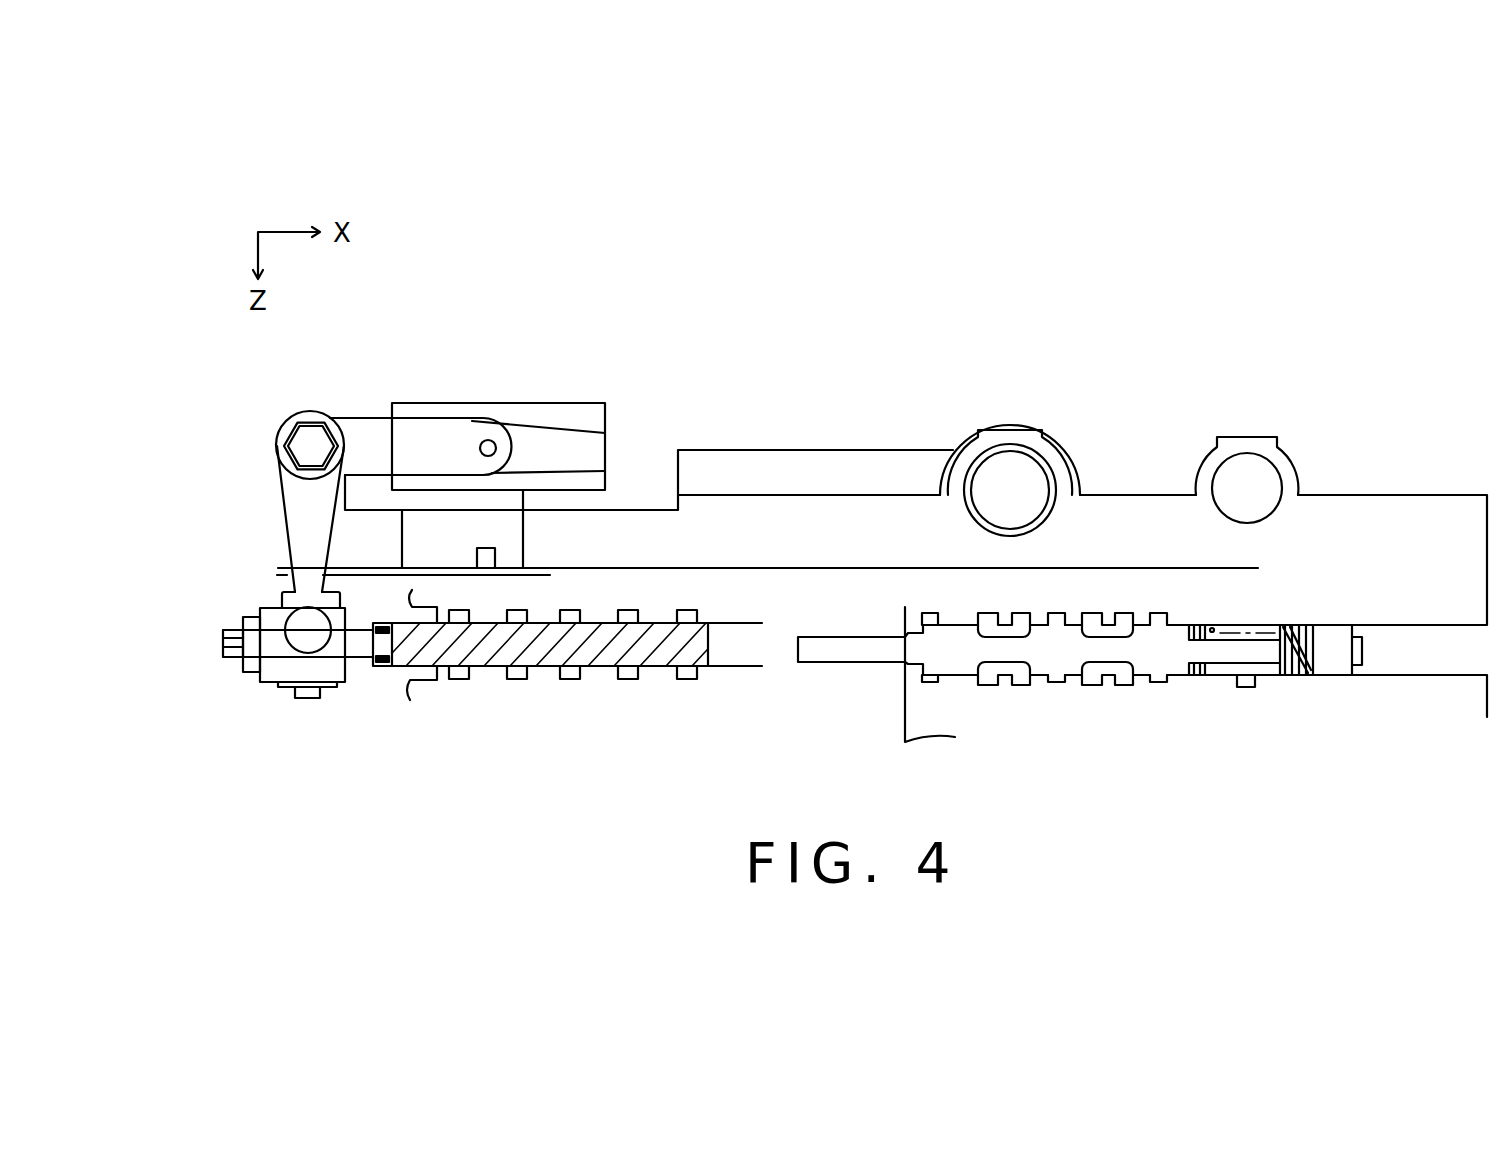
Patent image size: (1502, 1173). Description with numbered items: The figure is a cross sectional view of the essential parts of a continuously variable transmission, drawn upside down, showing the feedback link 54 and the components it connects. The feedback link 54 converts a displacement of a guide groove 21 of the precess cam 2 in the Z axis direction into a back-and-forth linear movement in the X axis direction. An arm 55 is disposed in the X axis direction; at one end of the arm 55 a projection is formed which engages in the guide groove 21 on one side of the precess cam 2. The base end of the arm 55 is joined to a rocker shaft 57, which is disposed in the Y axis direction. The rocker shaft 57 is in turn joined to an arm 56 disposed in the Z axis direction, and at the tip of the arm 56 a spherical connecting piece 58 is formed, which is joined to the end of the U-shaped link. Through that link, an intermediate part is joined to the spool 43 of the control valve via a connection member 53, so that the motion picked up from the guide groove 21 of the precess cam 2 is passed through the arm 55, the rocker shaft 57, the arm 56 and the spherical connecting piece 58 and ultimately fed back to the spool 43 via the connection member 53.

The precess cam 2 is at (610, 420).
The guide groove 21 is at (560, 445).
The spool 43 is at (422, 645).
The connection member 53 is at (258, 680).
The feedback link 54 is at (243, 434).
The arm 55 is at (418, 430).
The arm 56 is at (307, 497).
The rocker shaft 57 is at (287, 420).
The spherical connecting piece 58 is at (295, 624).